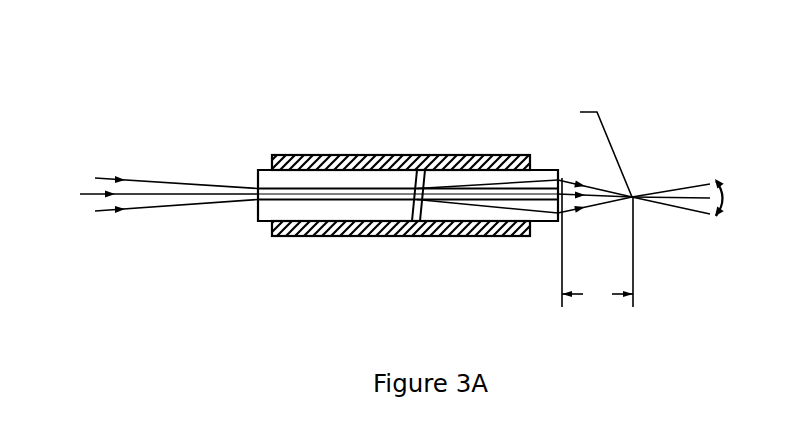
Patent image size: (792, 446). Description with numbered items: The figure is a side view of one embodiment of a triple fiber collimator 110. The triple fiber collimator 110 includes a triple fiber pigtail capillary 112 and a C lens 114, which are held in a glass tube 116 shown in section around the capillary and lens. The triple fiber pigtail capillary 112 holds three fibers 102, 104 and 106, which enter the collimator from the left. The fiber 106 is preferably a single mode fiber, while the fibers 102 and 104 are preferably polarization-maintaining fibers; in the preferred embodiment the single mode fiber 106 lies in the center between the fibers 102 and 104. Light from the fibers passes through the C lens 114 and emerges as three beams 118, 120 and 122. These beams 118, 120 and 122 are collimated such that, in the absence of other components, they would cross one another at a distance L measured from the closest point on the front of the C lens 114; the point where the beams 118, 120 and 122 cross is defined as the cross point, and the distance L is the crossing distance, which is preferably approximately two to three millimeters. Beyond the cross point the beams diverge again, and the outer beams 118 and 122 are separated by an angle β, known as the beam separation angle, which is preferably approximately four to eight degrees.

The fiber 102 is at (142, 178).
The fiber 104 is at (192, 200).
The single mode fiber 106 is at (183, 193).
The triple fiber collimator 110 is at (455, 44).
The triple fiber pigtail capillary 112 is at (257, 178).
The C lens 114 is at (543, 167).
The glass tube 116 is at (407, 155).
The beam 118 is at (617, 193).
The beam 120 is at (620, 203).
The beam 122 is at (563, 175).